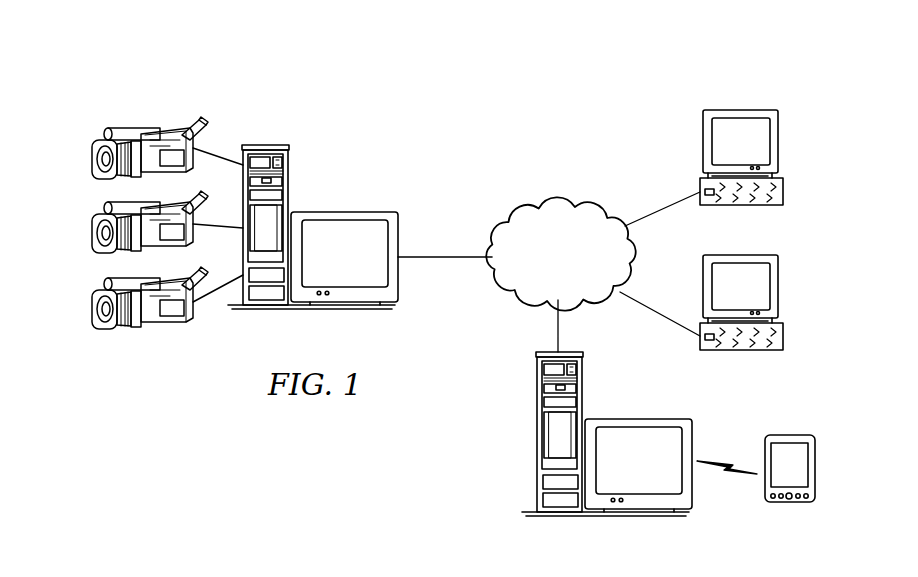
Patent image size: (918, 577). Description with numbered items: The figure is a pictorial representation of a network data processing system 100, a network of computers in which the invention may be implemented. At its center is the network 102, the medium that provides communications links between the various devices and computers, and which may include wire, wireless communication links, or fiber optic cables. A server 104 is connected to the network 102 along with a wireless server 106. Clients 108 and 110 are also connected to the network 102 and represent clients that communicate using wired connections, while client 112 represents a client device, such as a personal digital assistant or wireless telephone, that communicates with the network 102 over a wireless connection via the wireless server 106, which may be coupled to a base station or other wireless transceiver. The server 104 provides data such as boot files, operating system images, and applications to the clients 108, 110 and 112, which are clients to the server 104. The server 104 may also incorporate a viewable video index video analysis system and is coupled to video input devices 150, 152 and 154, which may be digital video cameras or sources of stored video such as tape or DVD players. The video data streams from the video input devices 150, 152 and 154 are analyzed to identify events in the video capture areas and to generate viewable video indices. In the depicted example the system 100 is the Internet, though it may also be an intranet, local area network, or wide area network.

The network data processing system 100 is at (423, 133).
The network 102 is at (530, 206).
The server 104 is at (345, 212).
The wireless server 106 is at (537, 436).
The client 108 is at (778, 140).
The client 110 is at (778, 285).
The client 112 is at (789, 503).
The video input device 150 is at (92, 150).
The video input device 152 is at (92, 224).
The video input device 154 is at (92, 300).